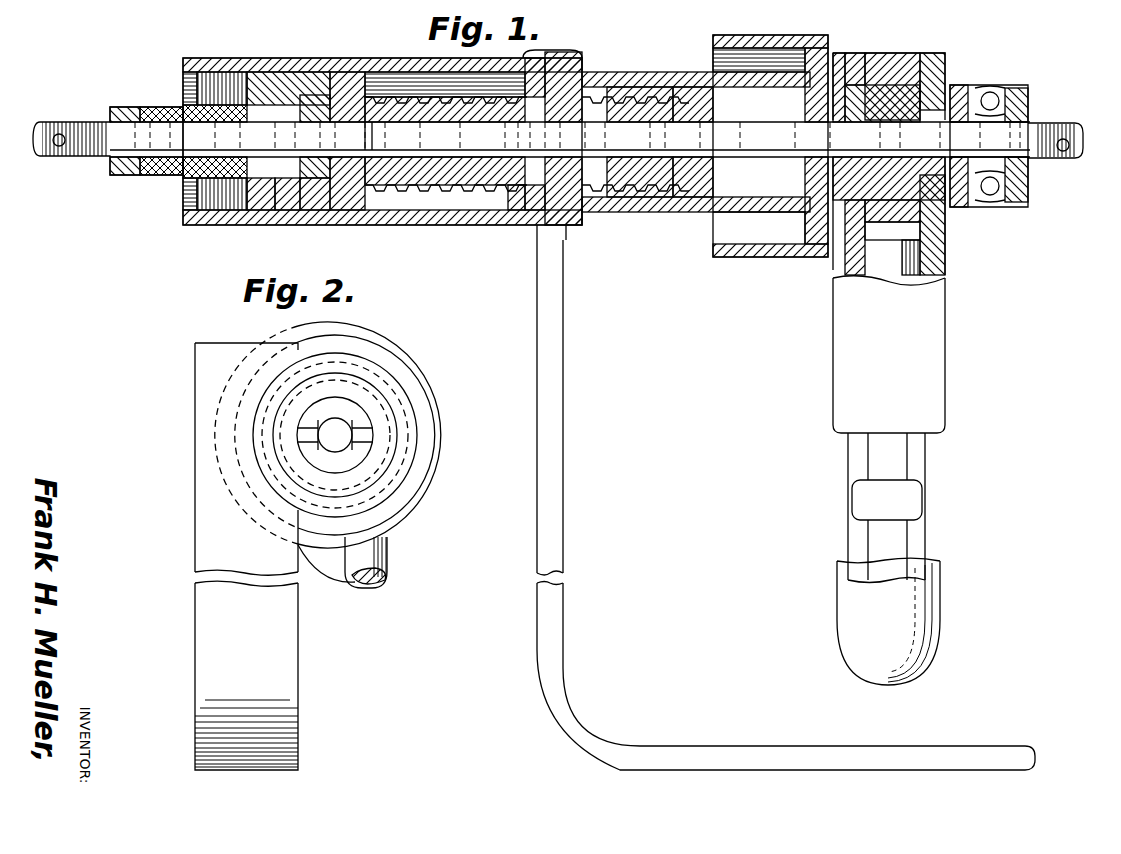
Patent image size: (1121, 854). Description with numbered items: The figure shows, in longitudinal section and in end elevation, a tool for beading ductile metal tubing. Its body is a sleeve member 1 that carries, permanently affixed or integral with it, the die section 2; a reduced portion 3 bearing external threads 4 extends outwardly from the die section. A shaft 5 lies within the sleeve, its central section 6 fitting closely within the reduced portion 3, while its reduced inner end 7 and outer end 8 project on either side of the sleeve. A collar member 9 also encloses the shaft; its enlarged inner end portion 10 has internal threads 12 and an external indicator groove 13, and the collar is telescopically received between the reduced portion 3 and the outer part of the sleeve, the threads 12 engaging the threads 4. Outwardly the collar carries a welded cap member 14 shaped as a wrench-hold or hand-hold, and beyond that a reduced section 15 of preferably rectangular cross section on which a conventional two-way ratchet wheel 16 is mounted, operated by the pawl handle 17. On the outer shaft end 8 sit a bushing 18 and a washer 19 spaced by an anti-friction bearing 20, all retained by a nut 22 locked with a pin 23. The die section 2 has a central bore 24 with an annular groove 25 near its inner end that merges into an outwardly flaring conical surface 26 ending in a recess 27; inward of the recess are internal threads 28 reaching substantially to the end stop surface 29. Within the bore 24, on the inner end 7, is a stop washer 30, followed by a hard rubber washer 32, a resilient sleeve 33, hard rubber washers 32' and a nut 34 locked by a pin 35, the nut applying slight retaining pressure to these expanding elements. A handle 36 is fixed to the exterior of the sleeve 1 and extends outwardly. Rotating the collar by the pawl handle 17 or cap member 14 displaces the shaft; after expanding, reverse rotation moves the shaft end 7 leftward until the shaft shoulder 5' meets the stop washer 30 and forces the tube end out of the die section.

In FIG. 1, the sleeve member 1 is at (405, 58).
In FIG. 2, the sleeve member 1 is at (415, 400).
In FIG. 1, the die section 2 is at (290, 72).
In FIG. 1, the reduced portion 3 is at (592, 108).
In FIG. 1, the external threads 4 is at (645, 100).
In FIG. 1, the shaft 5 is at (678, 169).
In FIG. 1, the shaft shoulder 5' is at (375, 188).
In FIG. 1, the central section 6 is at (440, 145).
In FIG. 1, the reduced inner end 7 is at (330, 150).
In FIG. 2, the reduced inner end 7 is at (340, 441).
In FIG. 1, the outer end 8 is at (955, 207).
In FIG. 1, the collar member 9 is at (688, 212).
In FIG. 1, the enlarged inner end portion 10 is at (583, 215).
In FIG. 1, the internal threads 12 is at (533, 205).
In FIG. 1, the external indicator groove 13 is at (518, 208).
In FIG. 1, the cap member 14 is at (770, 250).
In FIG. 2, the cap member 14 is at (440, 431).
In FIG. 1, the reduced section 15 is at (925, 108).
In FIG. 1, the two-way ratchet wheel 16 is at (893, 68).
In FIG. 1, the pawl handle 17 is at (946, 417).
In FIG. 2, the pawl handle 17 is at (388, 568).
In FIG. 1, the bushing 18 is at (962, 85).
In FIG. 1, the washer 19 is at (1026, 115).
In FIG. 1, the anti-friction bearing 20 is at (1010, 88).
In FIG. 1, the nut 22 is at (1058, 125).
In FIG. 1, the pin 23 is at (1068, 152).
In FIG. 1, the central bore 24 is at (300, 182).
In FIG. 1, the annular groove 25 is at (298, 192).
In FIG. 1, the outwardly flaring conical surface 26 is at (272, 195).
In FIG. 1, the recess 27 is at (250, 205).
In FIG. 1, the internal threads 28 is at (215, 203).
In FIG. 1, the end stop surface 29 is at (183, 210).
In FIG. 1, the stop washer 30 is at (340, 96).
In FIG. 1, the hard rubber washer 32 is at (310, 72).
In FIG. 1, the hard rubber washers 32' is at (147, 124).
In FIG. 1, the resilient sleeve 33 is at (181, 107).
In FIG. 1, the nut 34 is at (97, 107).
In FIG. 2, the nut 34 is at (345, 460).
In FIG. 1, the pin 35 is at (56, 146).
In FIG. 1, the handle 36 is at (565, 516).
In FIG. 2, the handle 36 is at (195, 558).